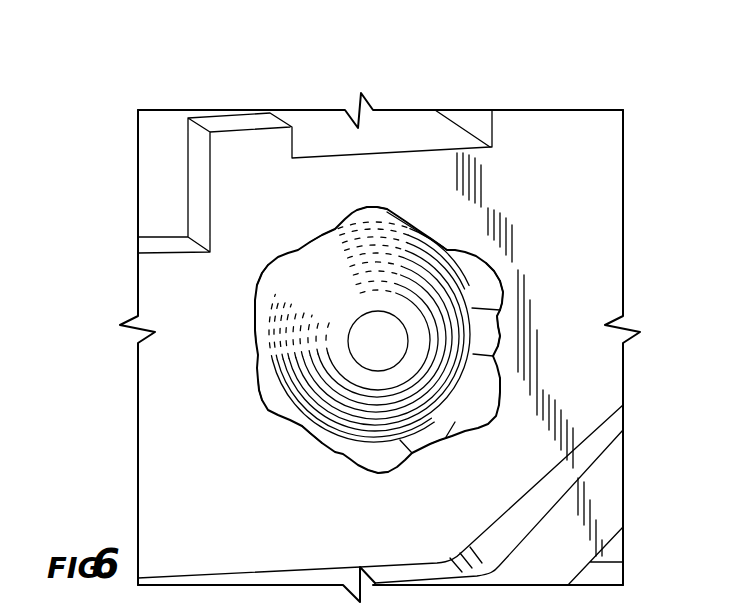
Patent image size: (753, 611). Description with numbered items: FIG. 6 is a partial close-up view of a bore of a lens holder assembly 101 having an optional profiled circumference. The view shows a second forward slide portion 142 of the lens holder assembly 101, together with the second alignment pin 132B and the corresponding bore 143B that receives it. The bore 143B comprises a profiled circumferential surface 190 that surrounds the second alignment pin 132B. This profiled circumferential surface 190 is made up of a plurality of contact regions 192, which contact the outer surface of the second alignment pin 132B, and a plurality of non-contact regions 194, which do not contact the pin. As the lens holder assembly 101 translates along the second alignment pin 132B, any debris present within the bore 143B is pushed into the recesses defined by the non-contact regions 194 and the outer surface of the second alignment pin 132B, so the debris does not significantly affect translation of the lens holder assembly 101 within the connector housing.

The lens holder assembly 101 is at (211, 76).
The second forward slide portion 142 is at (593, 168).
The profiled circumferential surface 190 is at (468, 234).
The contact regions 192 is at (318, 238).
The non-contact regions 194 is at (366, 206).
The bore 143B is at (508, 304).
The second alignment pin 132B is at (338, 347).